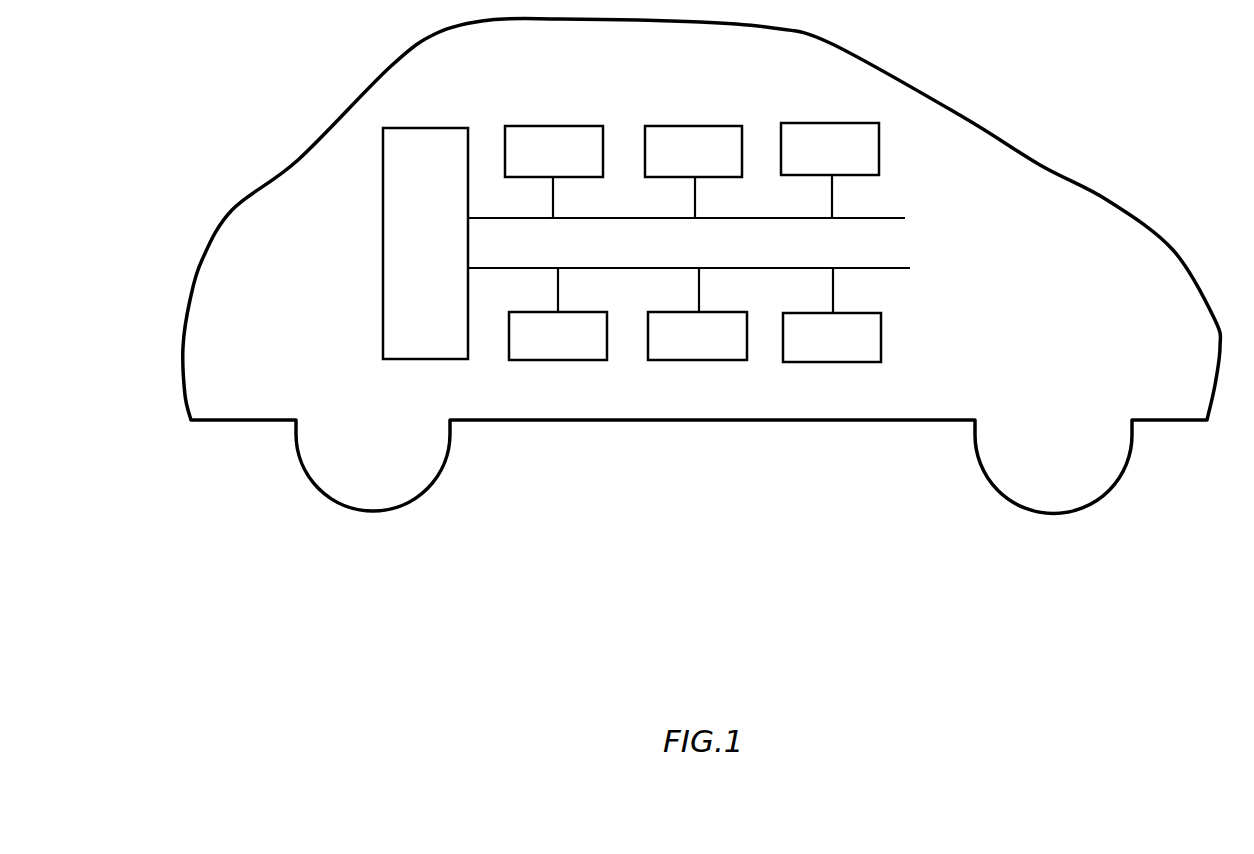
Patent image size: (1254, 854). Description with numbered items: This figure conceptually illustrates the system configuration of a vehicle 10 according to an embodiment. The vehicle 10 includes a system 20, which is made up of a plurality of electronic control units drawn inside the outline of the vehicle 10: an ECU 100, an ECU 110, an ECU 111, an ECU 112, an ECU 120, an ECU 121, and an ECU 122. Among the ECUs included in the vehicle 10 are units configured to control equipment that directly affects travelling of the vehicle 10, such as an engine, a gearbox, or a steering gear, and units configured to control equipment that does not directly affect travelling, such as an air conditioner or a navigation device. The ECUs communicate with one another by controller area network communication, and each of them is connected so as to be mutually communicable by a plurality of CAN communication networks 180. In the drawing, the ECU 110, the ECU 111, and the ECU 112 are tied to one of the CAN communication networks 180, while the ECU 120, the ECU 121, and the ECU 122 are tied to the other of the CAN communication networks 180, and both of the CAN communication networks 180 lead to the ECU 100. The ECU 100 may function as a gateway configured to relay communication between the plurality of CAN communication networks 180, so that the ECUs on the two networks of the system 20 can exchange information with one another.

The vehicle 10 is at (973, 120).
The system 20 is at (948, 366).
The ECU 100 is at (430, 128).
The ECU 110 is at (558, 126).
The ECU 111 is at (690, 126).
The ECU 112 is at (825, 123).
The ECU 120 is at (572, 360).
The ECU 121 is at (698, 360).
The ECU 122 is at (833, 362).
The CAN communication network 180 is at (882, 218).